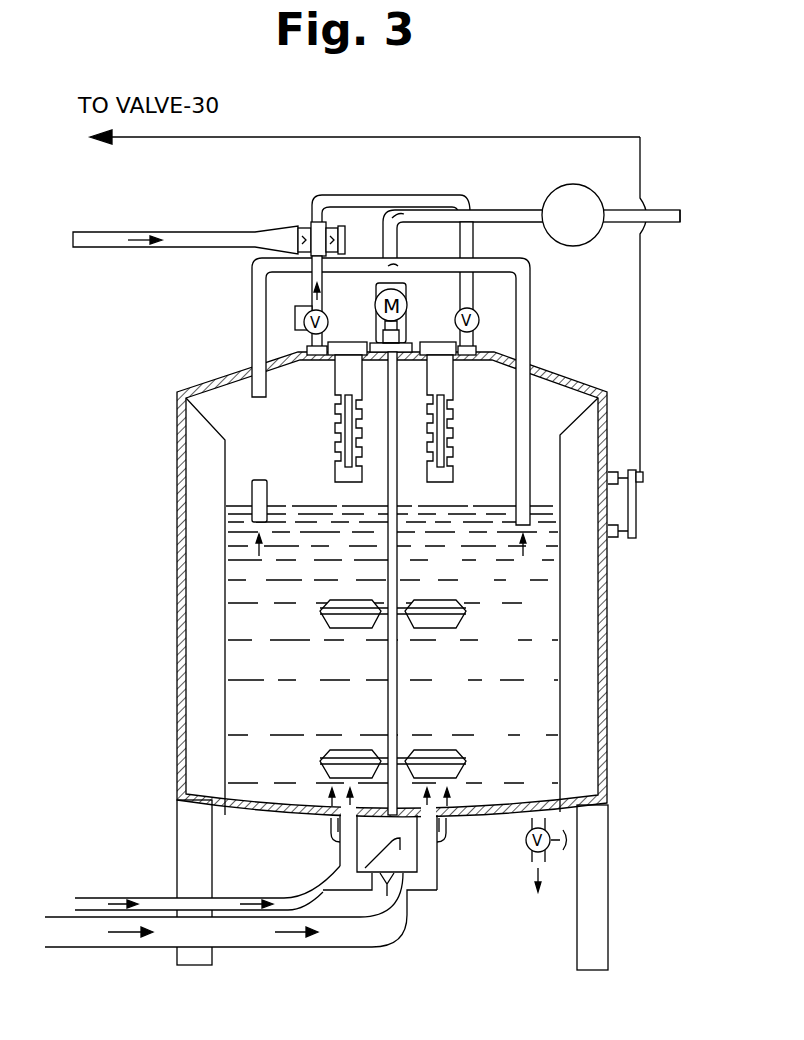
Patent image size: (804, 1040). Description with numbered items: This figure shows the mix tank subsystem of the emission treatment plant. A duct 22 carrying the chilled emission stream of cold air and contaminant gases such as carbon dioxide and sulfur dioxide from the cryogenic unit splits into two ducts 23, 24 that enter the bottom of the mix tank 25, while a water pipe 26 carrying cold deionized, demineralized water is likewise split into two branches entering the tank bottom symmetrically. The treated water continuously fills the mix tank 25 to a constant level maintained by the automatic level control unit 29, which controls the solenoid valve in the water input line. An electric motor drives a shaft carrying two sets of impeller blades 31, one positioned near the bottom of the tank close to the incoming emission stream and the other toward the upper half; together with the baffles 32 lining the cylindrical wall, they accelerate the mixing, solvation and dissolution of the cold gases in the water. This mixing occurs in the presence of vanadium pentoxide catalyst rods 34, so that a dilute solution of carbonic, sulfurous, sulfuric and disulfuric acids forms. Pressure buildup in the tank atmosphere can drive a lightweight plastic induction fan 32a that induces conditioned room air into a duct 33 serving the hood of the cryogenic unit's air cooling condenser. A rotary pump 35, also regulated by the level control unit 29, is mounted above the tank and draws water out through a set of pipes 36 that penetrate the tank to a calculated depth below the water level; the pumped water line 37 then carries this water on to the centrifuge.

The duct 22 is at (272, 946).
The duct 23 is at (340, 862).
The duct 24 is at (437, 862).
The mix tank 25 is at (610, 692).
The water pipe 26 is at (278, 894).
The automatic level control unit 29 is at (634, 496).
The impeller blades 31 is at (460, 600).
The baffles 32 is at (226, 712).
The induction fan 32a is at (310, 226).
The duct 33 is at (176, 230).
The vanadium pentoxide catalyst rods 34 is at (335, 432).
The rotary pump 35 is at (558, 184).
The pipes 36 is at (531, 335).
The pumped water line 37 is at (676, 224).